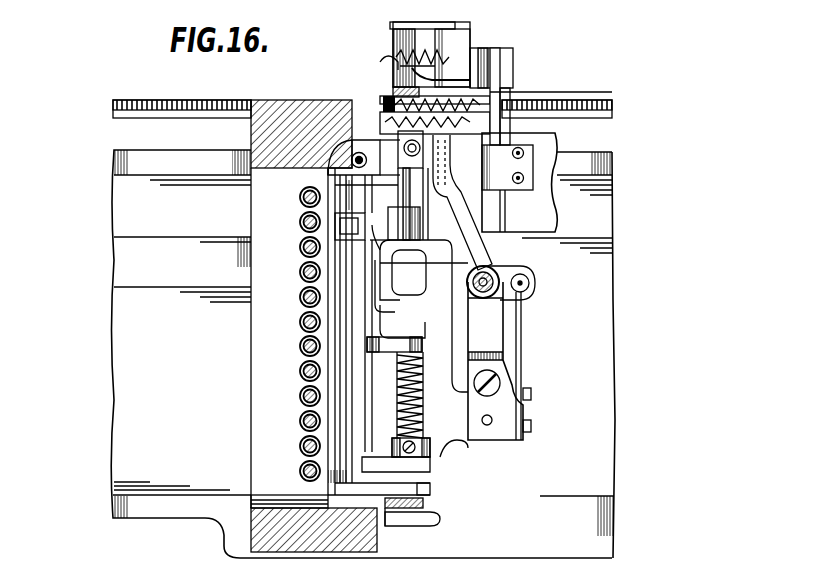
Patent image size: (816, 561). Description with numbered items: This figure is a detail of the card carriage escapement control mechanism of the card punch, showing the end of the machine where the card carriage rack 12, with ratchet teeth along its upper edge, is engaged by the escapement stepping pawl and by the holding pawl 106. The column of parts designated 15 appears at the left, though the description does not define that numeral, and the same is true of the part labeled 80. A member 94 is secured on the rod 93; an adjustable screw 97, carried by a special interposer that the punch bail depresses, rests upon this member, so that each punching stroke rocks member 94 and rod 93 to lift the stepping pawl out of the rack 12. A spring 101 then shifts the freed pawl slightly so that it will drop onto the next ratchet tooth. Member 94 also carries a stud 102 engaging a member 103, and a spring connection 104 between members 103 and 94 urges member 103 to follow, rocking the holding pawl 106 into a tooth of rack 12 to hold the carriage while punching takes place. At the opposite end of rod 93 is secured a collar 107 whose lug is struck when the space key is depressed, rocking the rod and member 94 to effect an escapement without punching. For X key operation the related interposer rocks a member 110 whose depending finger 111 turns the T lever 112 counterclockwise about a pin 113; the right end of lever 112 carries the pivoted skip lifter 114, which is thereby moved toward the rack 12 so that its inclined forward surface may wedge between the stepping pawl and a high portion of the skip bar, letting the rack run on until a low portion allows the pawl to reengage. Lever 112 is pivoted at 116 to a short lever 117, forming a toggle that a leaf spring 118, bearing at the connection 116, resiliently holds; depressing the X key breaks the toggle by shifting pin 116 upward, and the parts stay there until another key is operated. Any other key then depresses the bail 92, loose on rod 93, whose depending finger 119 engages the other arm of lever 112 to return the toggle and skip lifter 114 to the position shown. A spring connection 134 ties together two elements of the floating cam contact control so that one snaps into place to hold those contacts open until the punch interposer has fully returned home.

The card carriage rack 12 is at (604, 100).
The keys 15 is at (300, 368).
The bracket 80 is at (498, 208).
The bail 92 is at (355, 380).
The rod 93 is at (423, 414).
The member 94 is at (312, 104).
The adjustable screw 97 is at (356, 153).
The spring 101 is at (456, 86).
The stud 102 is at (426, 185).
The member 103 is at (386, 100).
The spring connection 104 is at (497, 82).
The holding pawl 106 is at (365, 102).
The collar 107 is at (432, 455).
The member 110 is at (340, 232).
The depending finger 111 is at (415, 325).
The T lever 112 is at (472, 282).
The pin 113 is at (426, 272).
The skip lifter 114 is at (466, 212).
The pivot pin 116 is at (496, 266).
The short lever 117 is at (530, 283).
The leaf spring 118 is at (490, 322).
The depending finger 119 is at (424, 255).
The spring connection 134 is at (512, 98).